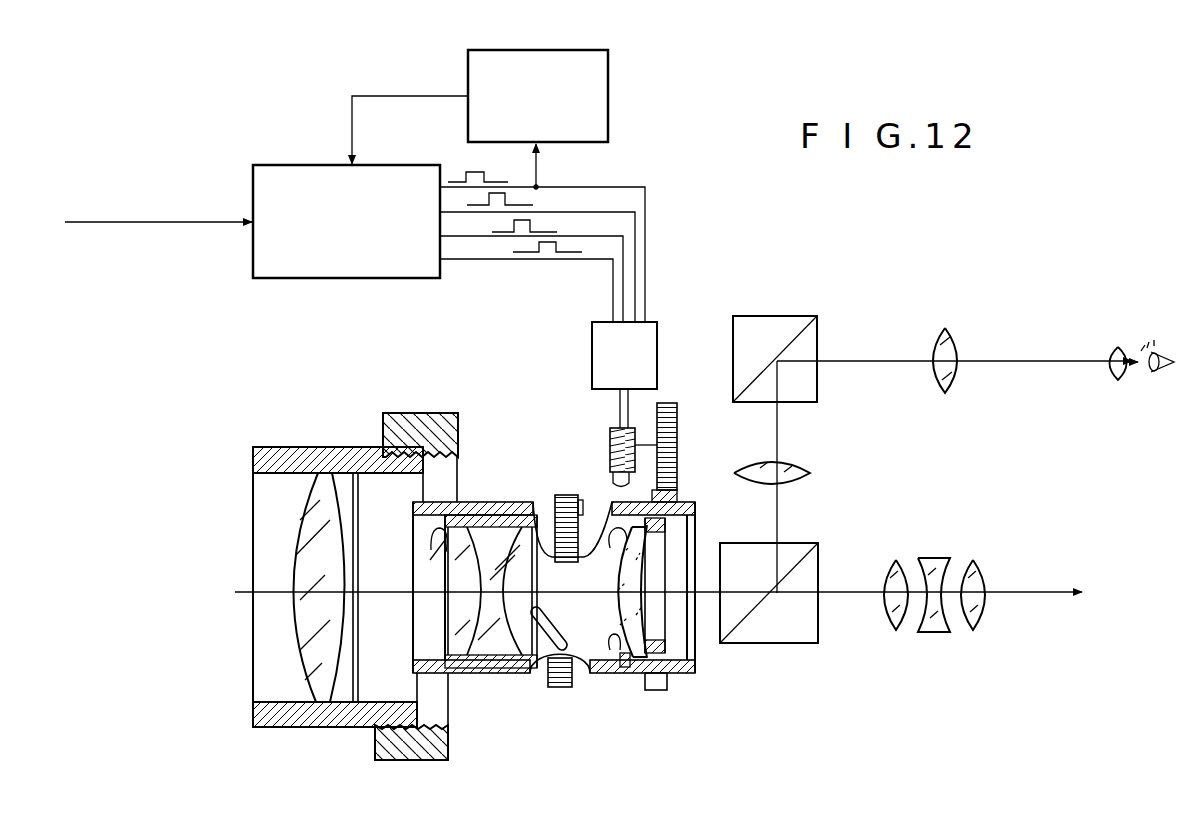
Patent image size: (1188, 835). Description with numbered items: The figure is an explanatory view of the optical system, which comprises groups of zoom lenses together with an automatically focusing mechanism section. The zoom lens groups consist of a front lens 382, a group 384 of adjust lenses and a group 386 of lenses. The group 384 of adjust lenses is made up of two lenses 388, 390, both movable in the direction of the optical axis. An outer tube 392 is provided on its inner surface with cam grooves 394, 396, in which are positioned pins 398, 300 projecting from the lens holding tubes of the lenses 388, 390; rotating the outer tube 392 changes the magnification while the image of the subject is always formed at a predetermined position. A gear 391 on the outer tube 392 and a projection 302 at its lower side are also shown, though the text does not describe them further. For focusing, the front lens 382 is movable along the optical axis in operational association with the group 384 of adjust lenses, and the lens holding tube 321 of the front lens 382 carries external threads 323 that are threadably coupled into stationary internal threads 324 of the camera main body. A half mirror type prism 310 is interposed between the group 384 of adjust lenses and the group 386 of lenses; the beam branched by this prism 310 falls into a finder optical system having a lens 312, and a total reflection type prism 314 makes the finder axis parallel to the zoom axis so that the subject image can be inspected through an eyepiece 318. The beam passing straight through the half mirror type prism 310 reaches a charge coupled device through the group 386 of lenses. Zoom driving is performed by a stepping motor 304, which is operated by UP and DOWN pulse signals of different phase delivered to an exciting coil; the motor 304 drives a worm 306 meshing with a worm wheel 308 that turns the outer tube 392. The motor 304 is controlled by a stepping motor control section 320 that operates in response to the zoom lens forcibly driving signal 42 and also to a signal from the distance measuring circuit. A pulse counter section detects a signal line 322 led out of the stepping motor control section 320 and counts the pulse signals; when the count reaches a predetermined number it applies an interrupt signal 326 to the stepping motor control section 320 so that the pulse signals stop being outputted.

The zoom lens forcibly driving signal 42 is at (130, 222).
The stepping motor control section 320 is at (297, 165).
The stationary internal threads 324 is at (608, 80).
The interrupt signal 326 is at (388, 96).
The signal line 322 is at (611, 192).
The stepping motor 304 is at (657, 325).
The worm 306 is at (608, 440).
The worm wheel 308 is at (677, 440).
The beam splitter prism 314 is at (816, 316).
The eyepiece 318 is at (1110, 347).
The lens 312 is at (790, 470).
The half mirror type prism 310 is at (817, 543).
The group of lenses 386 is at (935, 558).
The lens holding tube 321 is at (270, 700).
The external threads 323 is at (383, 712).
The front lens 382 is at (295, 620).
The group of adjust lenses 384 is at (485, 502).
The gear 391 is at (518, 502).
The pin 398 is at (415, 582).
The lens 388 is at (497, 648).
The cam groove 394 is at (553, 636).
The cam groove 396 is at (614, 652).
The pin 300 is at (588, 582).
The outer tube 392 is at (600, 673).
The lens 390 is at (633, 675).
The projection 302 is at (665, 690).